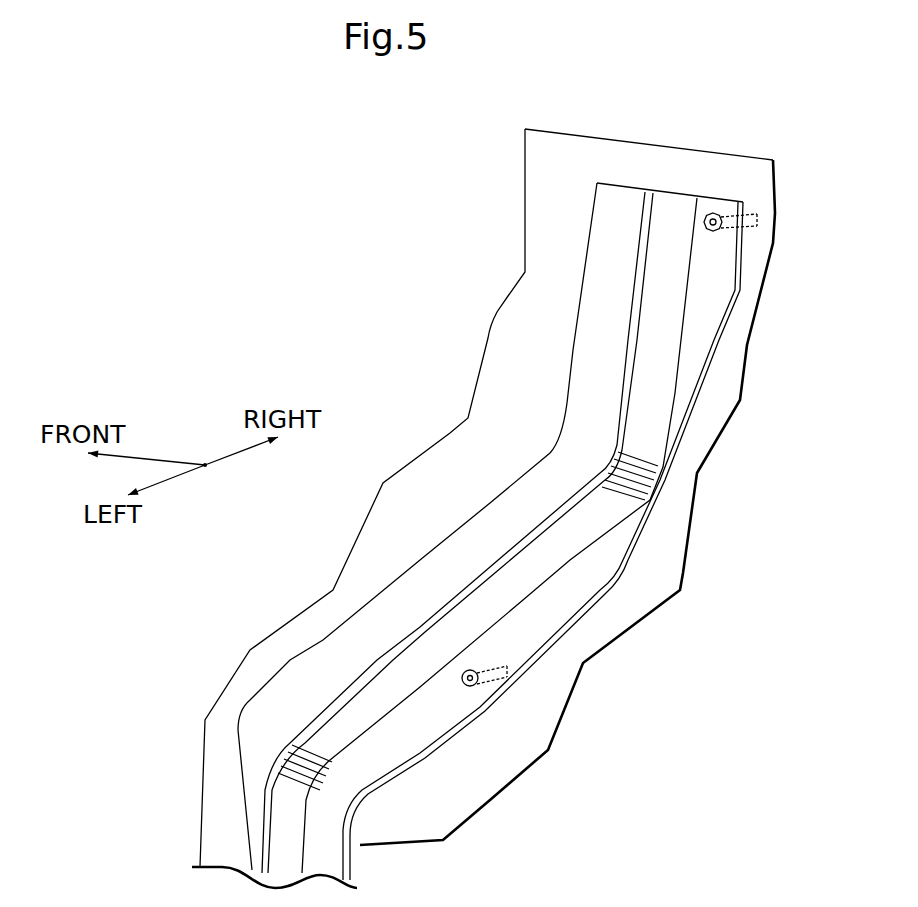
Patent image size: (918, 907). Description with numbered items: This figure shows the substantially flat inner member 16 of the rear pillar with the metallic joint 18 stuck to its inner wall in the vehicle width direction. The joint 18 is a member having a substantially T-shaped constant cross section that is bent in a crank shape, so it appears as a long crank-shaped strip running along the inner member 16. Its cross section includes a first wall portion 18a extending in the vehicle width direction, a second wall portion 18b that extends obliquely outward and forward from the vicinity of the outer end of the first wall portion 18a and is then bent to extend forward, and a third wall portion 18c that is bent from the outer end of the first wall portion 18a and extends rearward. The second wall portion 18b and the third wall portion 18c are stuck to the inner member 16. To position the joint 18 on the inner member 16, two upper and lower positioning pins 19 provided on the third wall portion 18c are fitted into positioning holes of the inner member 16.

The inner member 16 is at (507, 295).
The joint 18 is at (408, 570).
The first wall portion 18a is at (548, 545).
The second wall portion 18b is at (580, 408).
The third wall portion 18c is at (617, 550).
The positioning pin 19 is at (711, 213).